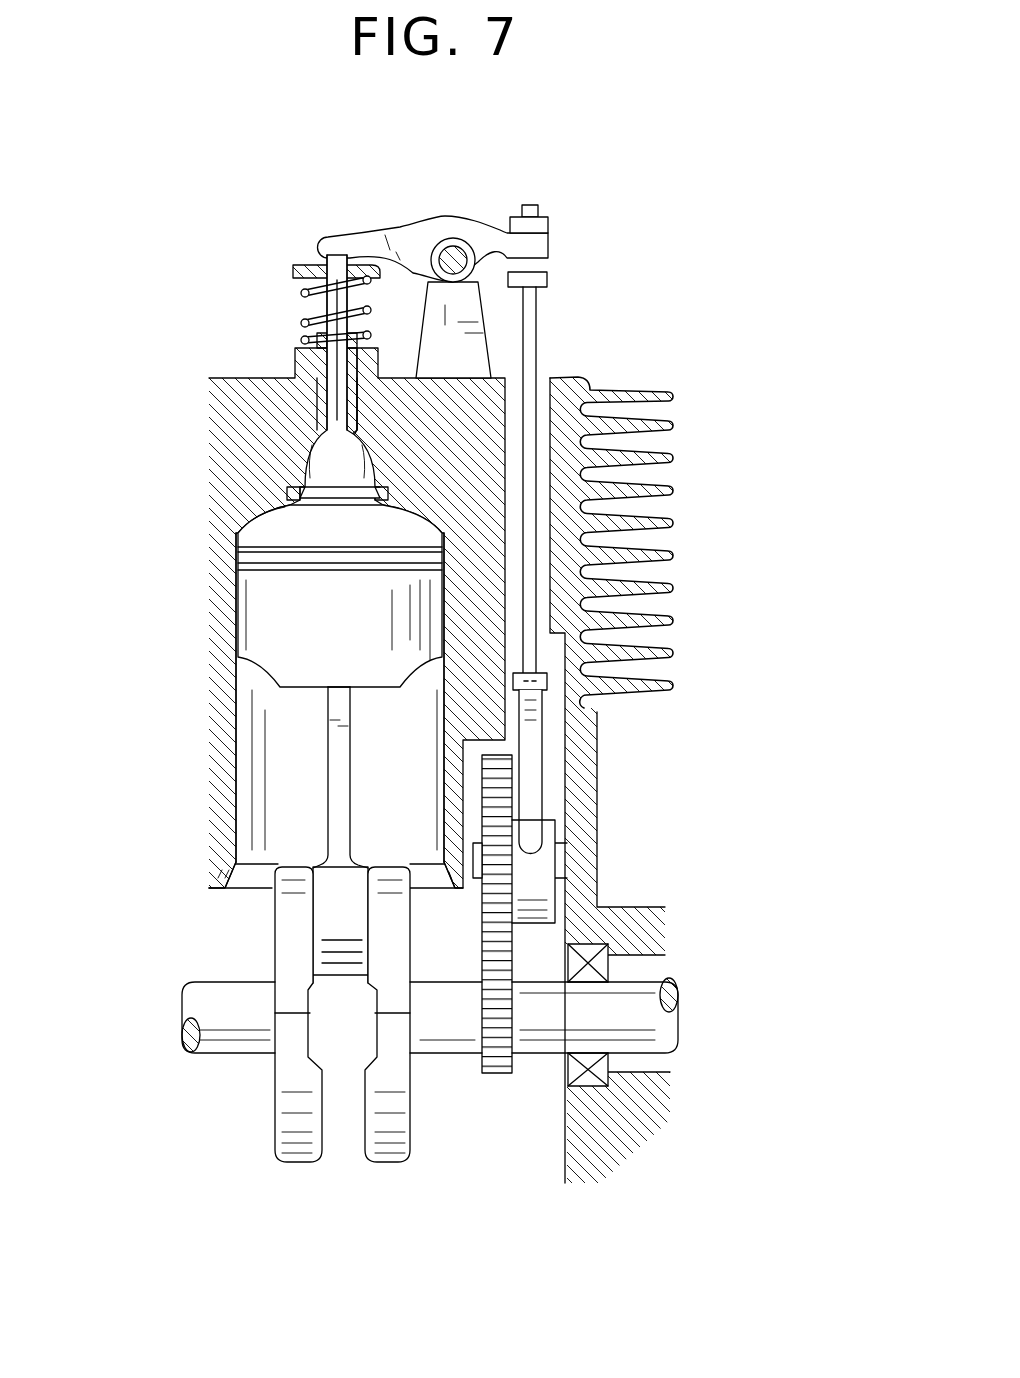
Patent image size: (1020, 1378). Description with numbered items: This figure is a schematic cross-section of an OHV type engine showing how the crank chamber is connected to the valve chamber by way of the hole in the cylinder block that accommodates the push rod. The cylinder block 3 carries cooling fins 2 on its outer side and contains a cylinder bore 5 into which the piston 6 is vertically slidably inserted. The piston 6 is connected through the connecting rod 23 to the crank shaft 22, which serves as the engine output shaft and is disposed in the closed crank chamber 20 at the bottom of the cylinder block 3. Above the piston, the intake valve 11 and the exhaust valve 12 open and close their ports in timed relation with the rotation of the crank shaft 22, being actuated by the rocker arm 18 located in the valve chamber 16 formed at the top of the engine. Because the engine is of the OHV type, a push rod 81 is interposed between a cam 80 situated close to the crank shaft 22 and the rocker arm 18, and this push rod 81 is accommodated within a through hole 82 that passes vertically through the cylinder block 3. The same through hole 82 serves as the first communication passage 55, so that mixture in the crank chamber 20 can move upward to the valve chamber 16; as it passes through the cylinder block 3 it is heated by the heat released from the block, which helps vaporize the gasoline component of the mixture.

The cooling fins 2 is at (673, 397).
The cylinder block 3 is at (235, 457).
The cylinder bore 5 is at (243, 802).
The piston 6 is at (298, 603).
The intake valve 11 is at (246, 374).
The exhaust valve 12 is at (320, 312).
The valve chamber 16 is at (662, 529).
The rocker arm 18 is at (415, 245).
The crank chamber 20 is at (437, 1060).
The crank shaft 22 is at (640, 1003).
The connecting rod 23 is at (330, 760).
The first communication passage 55 is at (541, 667).
The cam 80 is at (522, 878).
The push rod 81 is at (527, 514).
The through hole 82 is at (664, 648).